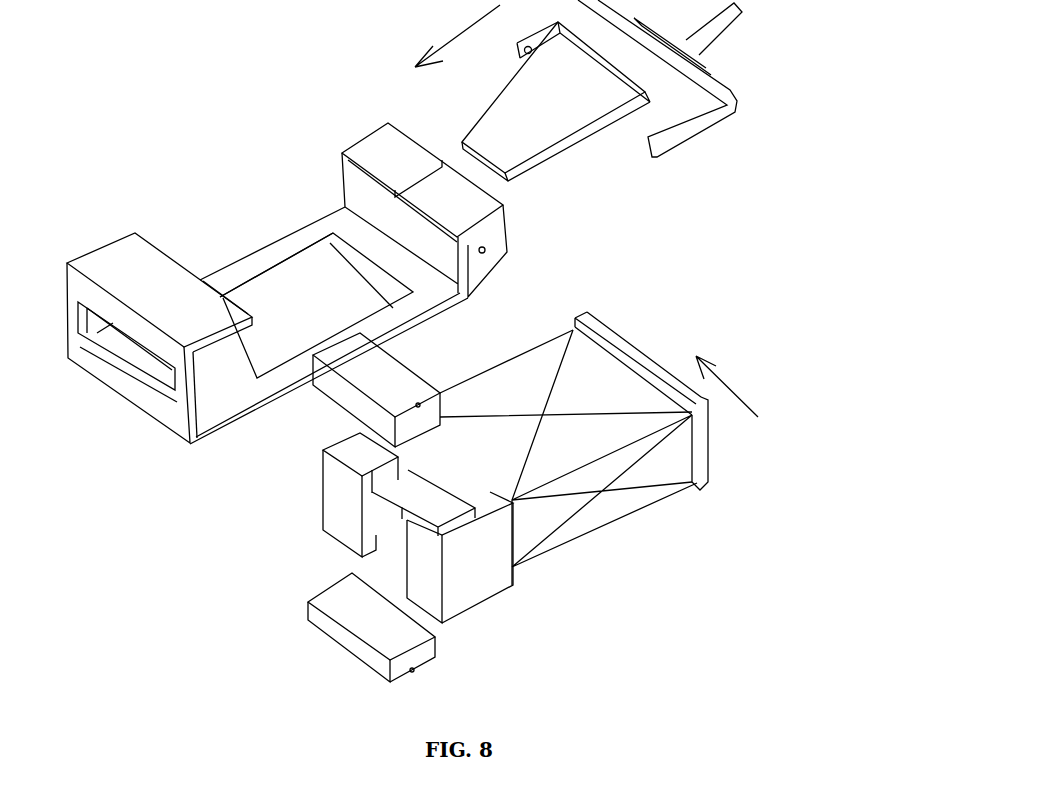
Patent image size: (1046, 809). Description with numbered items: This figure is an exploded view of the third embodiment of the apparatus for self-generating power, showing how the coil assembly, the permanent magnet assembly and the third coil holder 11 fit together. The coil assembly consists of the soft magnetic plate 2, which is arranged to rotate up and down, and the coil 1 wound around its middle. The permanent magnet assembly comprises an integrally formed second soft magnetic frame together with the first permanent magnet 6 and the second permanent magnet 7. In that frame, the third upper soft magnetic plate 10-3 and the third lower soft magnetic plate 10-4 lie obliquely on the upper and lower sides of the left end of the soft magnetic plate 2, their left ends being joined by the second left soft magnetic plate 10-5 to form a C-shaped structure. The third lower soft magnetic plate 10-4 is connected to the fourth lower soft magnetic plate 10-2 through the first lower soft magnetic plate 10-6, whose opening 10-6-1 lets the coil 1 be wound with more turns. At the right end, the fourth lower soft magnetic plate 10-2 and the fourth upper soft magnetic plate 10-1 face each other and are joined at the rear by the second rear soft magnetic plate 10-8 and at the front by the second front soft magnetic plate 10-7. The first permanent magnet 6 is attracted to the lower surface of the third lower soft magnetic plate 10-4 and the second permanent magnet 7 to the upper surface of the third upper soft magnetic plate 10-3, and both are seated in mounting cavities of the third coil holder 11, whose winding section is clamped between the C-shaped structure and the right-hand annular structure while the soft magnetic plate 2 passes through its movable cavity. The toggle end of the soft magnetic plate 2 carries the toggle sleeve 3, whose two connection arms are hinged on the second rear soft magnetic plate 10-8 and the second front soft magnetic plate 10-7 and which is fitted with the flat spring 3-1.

The coil 1 is at (602, 478).
The soft magnetic plate 2 is at (538, 122).
The toggle sleeve 3 is at (683, 82).
The flat spring 3-1 is at (715, 66).
The first permanent magnet 6 is at (392, 623).
The second permanent magnet 7 is at (397, 383).
The fourth upper soft magnetic plate 10-1 is at (407, 160).
The fourth lower soft magnetic plate 10-2 is at (468, 268).
The third upper soft magnetic plate 10-3 is at (148, 263).
The third lower soft magnetic plate 10-4 is at (207, 393).
The second left soft magnetic plate 10-5 is at (150, 397).
The first lower soft magnetic plate 10-6 is at (313, 227).
The opening 10-6-1 is at (317, 277).
The second front soft magnetic plate 10-7 is at (493, 243).
The second rear soft magnetic plate 10-8 is at (360, 180).
The third coil holder 11 is at (485, 555).